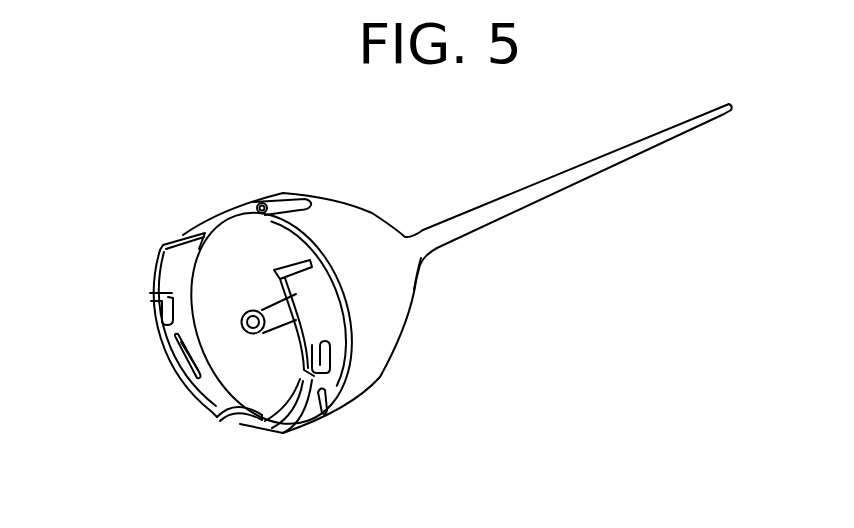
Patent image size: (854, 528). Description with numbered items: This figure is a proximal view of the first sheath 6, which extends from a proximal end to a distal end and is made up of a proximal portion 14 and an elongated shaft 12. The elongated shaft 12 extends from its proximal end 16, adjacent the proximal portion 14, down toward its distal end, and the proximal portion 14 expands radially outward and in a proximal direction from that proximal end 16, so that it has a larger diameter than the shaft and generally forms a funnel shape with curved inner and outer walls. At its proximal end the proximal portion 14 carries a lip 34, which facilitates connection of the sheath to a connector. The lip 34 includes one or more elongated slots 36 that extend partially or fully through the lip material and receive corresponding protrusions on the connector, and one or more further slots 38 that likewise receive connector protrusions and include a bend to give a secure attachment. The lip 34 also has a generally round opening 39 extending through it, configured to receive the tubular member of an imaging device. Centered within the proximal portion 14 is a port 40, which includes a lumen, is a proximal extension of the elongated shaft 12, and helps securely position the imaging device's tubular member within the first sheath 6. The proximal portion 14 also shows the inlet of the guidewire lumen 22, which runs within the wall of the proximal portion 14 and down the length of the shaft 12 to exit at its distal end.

The first sheath 6 is at (355, 184).
The elongated shaft 12 is at (515, 203).
The proximal portion 14 is at (382, 327).
The proximal end 16 is at (423, 262).
The guidewire lumen 22 is at (273, 202).
The lip 34 is at (175, 267).
The slots 36 is at (185, 360).
The slots 38 is at (155, 302).
The opening 39 is at (233, 413).
The port 40 is at (252, 310).